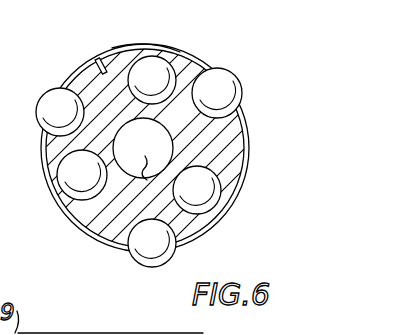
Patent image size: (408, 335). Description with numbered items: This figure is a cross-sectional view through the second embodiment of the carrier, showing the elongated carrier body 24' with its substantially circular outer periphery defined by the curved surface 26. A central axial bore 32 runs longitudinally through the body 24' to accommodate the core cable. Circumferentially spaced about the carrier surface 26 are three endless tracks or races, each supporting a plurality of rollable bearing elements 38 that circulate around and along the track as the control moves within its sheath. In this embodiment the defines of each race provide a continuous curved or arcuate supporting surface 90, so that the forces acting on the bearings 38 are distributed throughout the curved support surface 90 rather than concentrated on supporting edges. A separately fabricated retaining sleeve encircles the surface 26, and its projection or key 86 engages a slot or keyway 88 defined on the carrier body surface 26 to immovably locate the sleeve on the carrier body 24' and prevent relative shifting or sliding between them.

The carrier body 24' is at (204, 150).
The curved surface 26 is at (102, 246).
The central axial bore 32 is at (143, 149).
The rollable bearing elements 38 is at (43, 95).
The projection or key 86 is at (97, 60).
The slot or keyway 88 is at (115, 48).
The curved supporting surface 90 is at (132, 89).